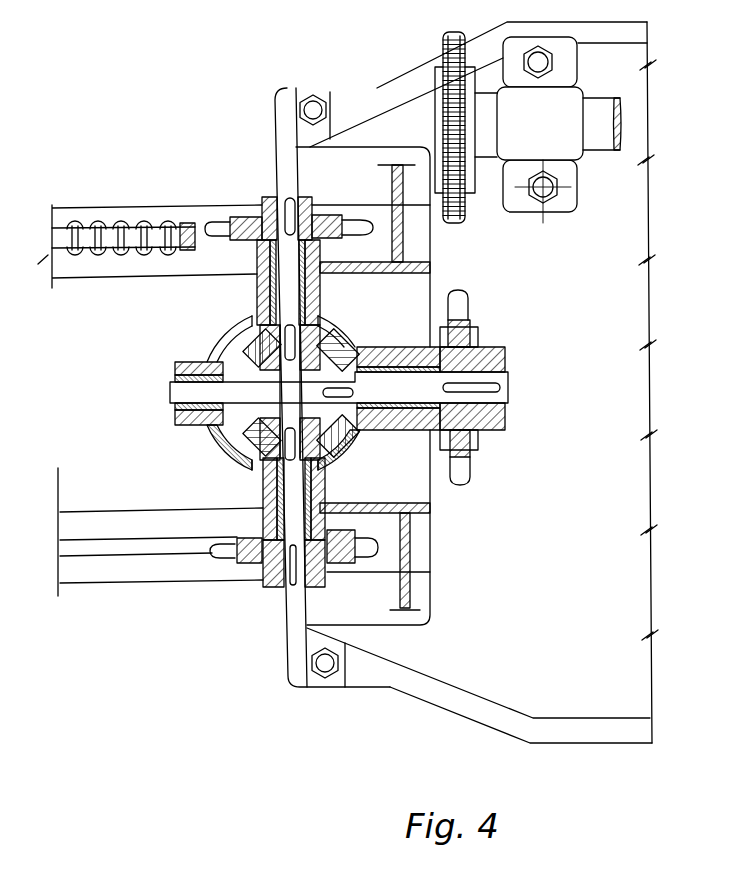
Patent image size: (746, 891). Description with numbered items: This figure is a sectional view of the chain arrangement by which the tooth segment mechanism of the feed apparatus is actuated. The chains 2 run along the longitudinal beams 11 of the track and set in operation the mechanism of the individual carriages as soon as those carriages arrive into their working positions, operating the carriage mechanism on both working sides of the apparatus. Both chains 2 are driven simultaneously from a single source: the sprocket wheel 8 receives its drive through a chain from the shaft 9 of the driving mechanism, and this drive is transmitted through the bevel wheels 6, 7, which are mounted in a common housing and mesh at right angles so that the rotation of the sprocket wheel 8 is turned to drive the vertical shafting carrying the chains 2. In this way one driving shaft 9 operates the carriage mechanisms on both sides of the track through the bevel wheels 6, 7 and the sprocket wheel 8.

The chain 2 is at (147, 222).
The bevel wheel 6 is at (262, 433).
The bevel wheel 7 is at (360, 437).
The sprocket wheel 8 is at (462, 300).
The shaft 9 is at (606, 138).
The longitudinal beam 11 is at (171, 276).